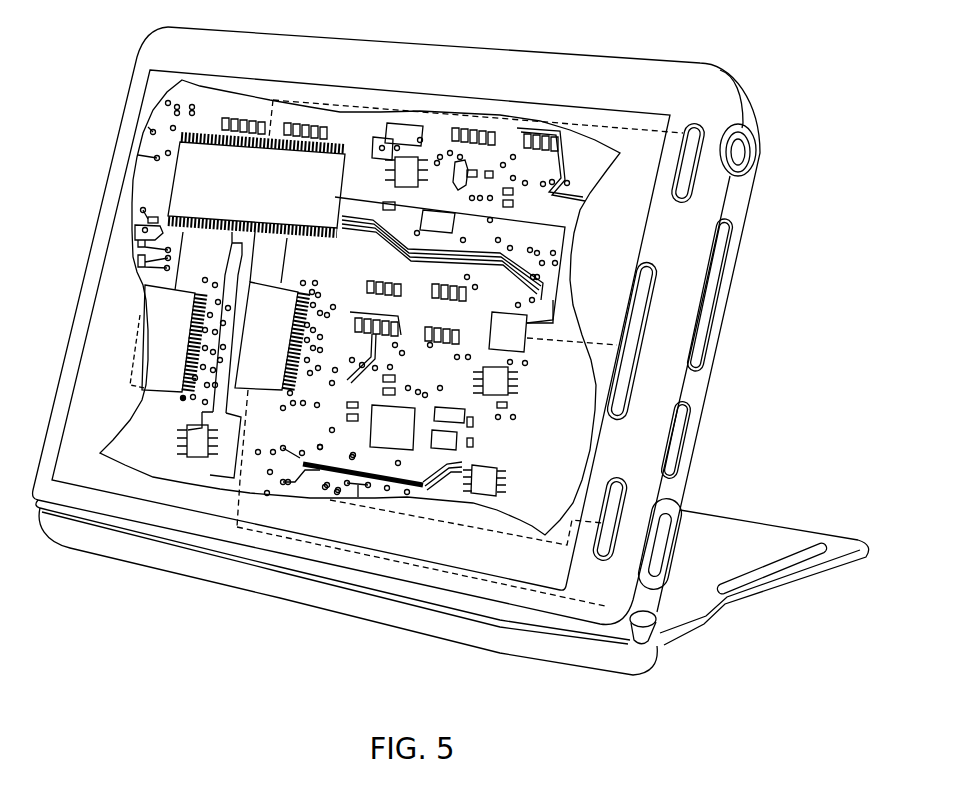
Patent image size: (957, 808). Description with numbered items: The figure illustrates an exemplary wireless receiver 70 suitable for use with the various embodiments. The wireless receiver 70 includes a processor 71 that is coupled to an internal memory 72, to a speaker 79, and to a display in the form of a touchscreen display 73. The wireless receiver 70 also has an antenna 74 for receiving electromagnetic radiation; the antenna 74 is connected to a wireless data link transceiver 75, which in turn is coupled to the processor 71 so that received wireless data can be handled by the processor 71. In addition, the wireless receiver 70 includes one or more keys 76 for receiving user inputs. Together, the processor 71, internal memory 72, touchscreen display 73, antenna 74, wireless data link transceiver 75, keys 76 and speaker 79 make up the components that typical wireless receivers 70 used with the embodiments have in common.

The wireless receiver 70 is at (697, 63).
The processor 71 is at (241, 195).
The internal memory 72 is at (155, 317).
The touchscreen display 73 is at (525, 100).
The antenna 74 is at (656, 634).
The wireless data link transceiver 75 is at (280, 335).
The keys 76 is at (694, 168).
The speaker 79 is at (647, 261).